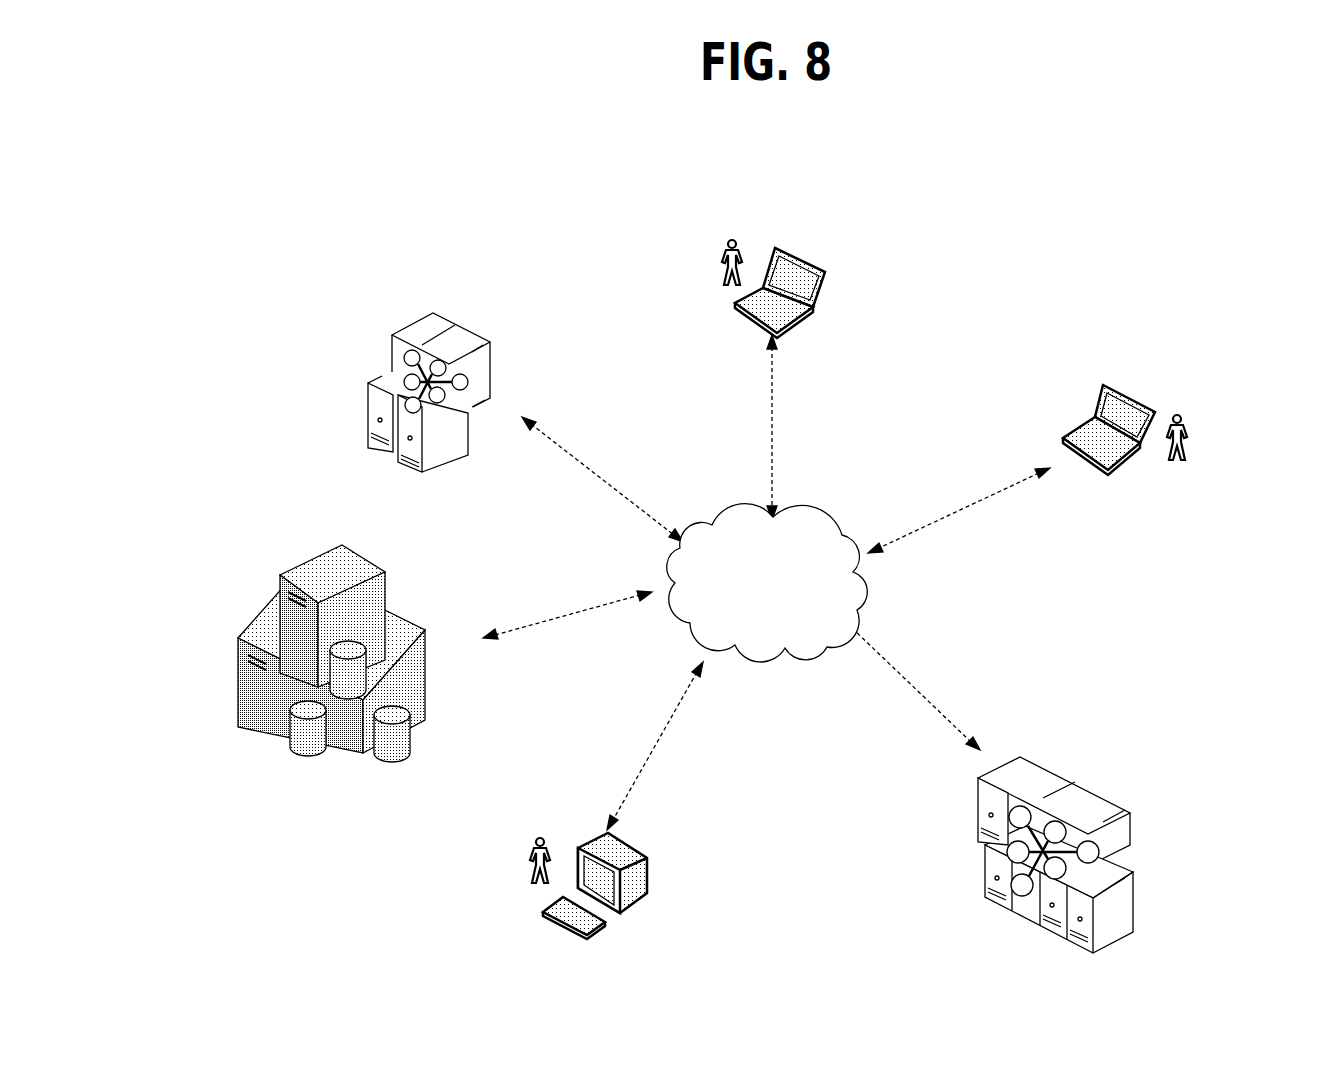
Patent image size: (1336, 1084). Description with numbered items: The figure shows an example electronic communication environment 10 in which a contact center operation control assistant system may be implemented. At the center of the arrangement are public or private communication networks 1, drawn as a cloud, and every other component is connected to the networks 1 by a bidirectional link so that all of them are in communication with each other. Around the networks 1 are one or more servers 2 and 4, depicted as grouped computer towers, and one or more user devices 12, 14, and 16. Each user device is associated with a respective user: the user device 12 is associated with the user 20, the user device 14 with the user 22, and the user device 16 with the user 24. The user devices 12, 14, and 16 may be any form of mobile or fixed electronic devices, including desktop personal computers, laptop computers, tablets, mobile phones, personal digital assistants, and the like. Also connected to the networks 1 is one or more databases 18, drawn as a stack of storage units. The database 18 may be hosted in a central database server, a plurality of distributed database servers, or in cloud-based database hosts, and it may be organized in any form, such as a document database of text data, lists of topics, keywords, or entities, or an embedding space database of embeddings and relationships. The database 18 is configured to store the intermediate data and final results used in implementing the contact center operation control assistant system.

The electronic communication environment 10 is at (192, 175).
The communication networks 1 is at (838, 537).
The server 2 is at (495, 352).
The server 4 is at (1115, 805).
The user device 12 is at (828, 326).
The user device 14 is at (1128, 468).
The user device 16 is at (664, 914).
The database 18 is at (437, 705).
The user 20 is at (740, 230).
The user 22 is at (1183, 418).
The user 24 is at (542, 830).